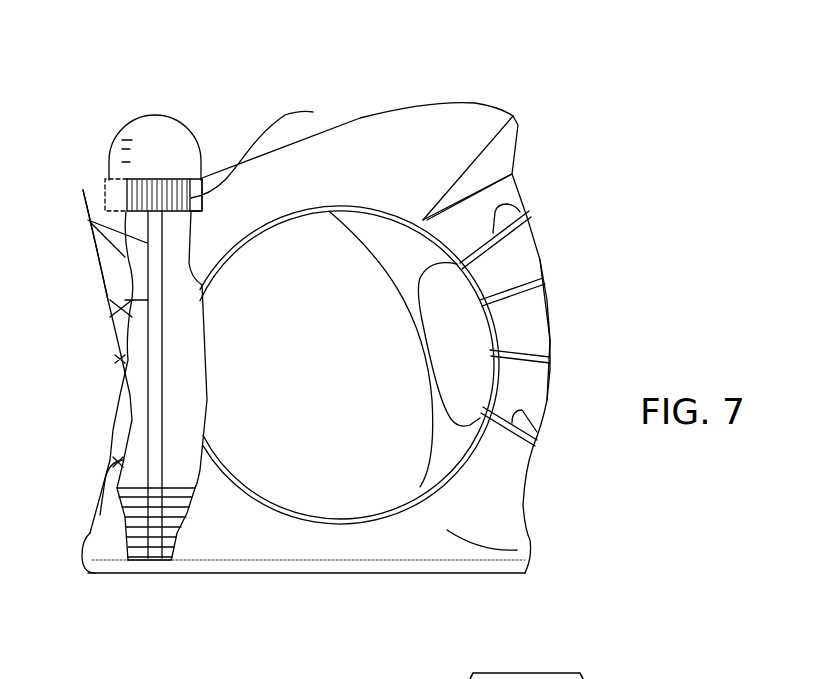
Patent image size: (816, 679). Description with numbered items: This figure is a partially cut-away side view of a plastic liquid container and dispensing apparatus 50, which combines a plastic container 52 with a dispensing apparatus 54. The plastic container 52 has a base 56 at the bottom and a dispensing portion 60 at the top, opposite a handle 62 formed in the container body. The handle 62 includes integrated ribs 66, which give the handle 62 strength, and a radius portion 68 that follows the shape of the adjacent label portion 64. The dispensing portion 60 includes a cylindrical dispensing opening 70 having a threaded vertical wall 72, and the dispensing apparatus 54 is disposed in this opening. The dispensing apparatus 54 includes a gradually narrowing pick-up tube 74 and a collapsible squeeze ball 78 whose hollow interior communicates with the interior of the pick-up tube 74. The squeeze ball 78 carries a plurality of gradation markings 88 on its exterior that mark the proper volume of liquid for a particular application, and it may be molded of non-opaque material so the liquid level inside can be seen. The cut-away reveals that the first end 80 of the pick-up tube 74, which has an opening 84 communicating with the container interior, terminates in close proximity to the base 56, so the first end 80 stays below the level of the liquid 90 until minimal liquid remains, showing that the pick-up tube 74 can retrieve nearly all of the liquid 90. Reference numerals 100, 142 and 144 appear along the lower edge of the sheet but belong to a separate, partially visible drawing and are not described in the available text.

The plastic liquid container and dispensing apparatus 50 is at (343, 90).
The plastic container 52 is at (445, 103).
The dispensing apparatus 54 is at (88, 220).
The base 56 is at (250, 575).
The dispensing portion 60 is at (263, 149).
The handle 62 is at (550, 317).
The label portion 64 is at (540, 253).
The integrated ribs 66 is at (530, 210).
The radius portion 68 is at (518, 187).
The cylindrical dispensing opening 70 is at (101, 186).
The threaded vertical wall 72 is at (202, 178).
The pick-up tube 74 is at (110, 305).
The collapsible squeeze ball 78 is at (160, 115).
The first end 80 is at (155, 562).
The opening 84 is at (150, 547).
The gradation markings 88 is at (123, 143).
The liquid 90 is at (140, 500).
The assembly 100 is at (415, 675).
The cover 142 is at (543, 672).
The member 144 is at (631, 675).